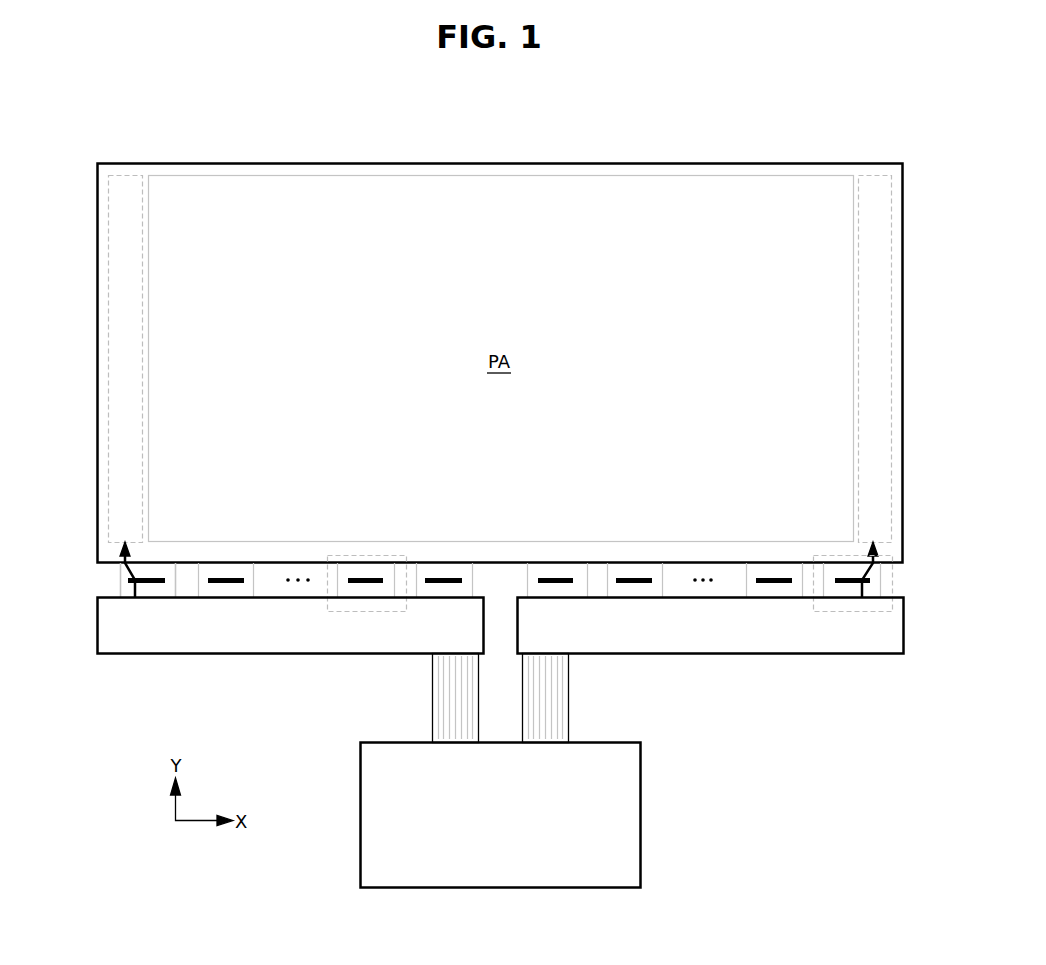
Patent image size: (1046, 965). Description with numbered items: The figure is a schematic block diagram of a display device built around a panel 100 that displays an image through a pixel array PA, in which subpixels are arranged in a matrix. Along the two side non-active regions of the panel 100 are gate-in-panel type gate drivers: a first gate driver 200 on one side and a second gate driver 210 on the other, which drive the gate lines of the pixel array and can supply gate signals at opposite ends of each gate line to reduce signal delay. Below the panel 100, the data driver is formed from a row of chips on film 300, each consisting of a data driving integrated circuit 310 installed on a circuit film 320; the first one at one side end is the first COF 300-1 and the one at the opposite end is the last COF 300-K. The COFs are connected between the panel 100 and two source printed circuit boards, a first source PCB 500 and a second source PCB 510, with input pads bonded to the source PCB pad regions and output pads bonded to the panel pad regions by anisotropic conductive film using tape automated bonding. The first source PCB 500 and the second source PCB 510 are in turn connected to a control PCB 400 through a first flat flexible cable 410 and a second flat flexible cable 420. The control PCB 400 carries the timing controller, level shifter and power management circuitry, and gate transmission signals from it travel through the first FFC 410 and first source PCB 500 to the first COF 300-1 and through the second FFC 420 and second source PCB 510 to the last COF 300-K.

The panel 100 is at (477, 163).
The first gate driver 200 is at (118, 347).
The second gate driver 210 is at (867, 347).
The chip on film 300 is at (345, 611).
The first COF 300-1 is at (195, 689).
The last COF 300-K is at (852, 611).
The data driving integrated circuit 310 is at (153, 584).
The circuit film 320 is at (167, 590).
The control PCB 400 is at (516, 824).
The first flat flexible cable 410 is at (432, 675).
The second flat flexible cable 420 is at (568, 675).
The first source PCB 500 is at (430, 636).
The second source PCB 510 is at (536, 636).